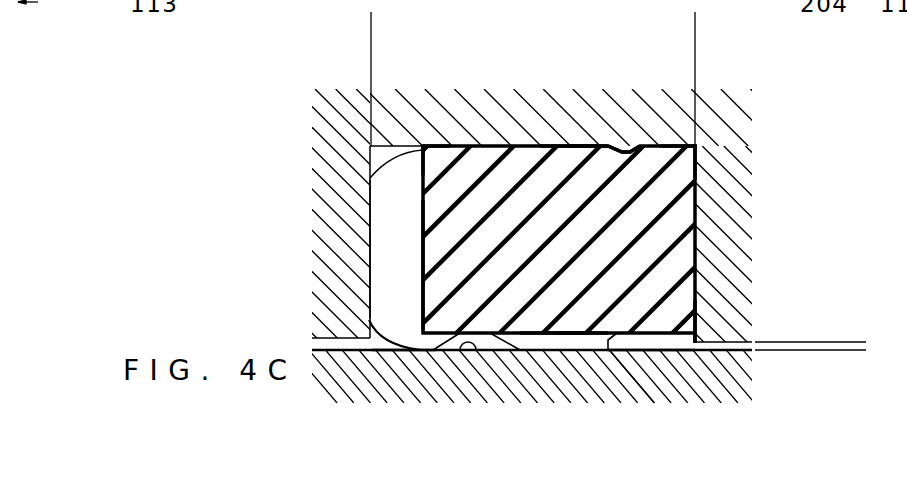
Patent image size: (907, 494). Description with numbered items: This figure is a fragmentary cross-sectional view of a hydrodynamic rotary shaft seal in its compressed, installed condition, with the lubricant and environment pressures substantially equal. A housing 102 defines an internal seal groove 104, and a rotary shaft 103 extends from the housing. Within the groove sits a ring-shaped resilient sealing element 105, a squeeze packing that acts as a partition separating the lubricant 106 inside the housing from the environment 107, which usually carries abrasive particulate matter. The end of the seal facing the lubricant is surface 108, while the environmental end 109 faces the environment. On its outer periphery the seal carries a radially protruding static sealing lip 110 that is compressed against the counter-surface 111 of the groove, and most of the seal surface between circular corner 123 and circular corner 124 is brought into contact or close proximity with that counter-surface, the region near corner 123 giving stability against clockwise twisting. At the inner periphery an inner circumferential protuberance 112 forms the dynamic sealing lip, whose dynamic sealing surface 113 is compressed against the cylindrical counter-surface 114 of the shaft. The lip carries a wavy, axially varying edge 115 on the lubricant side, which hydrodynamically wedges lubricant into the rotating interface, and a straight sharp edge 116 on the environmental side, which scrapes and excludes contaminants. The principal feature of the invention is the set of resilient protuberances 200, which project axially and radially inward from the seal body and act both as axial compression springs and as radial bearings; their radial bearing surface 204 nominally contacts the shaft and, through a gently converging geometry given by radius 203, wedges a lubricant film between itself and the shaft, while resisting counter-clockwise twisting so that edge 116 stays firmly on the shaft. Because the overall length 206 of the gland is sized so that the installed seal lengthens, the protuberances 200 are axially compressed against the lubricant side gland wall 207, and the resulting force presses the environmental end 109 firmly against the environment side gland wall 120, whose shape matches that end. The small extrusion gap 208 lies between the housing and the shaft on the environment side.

The housing 102 is at (480, 105).
The rotary shaft 103 is at (340, 373).
The seal groove 104 is at (392, 156).
The hydrodynamic rotary shaft sealing element 105 is at (547, 217).
The lubricant 106 is at (380, 342).
The environment 107 is at (640, 347).
The lubricant end surface 108 is at (423, 252).
The environmental end 109 is at (700, 250).
The static sealing lip 110 is at (567, 148).
The counter-surface of the groove 111 is at (578, 148).
The inner circumferential protuberance 112 is at (563, 333).
The dynamic sealing surface 113 is at (570, 330).
The counter-surface of the shaft 114 is at (580, 146).
The wavy axially varying edge 115 is at (503, 340).
The straight sharp edge 116 is at (627, 373).
The environment side gland wall 120 is at (690, 295).
The circular corner 123 is at (421, 145).
The circular corner 124 is at (697, 144).
The resilient protuberances 200 is at (387, 240).
The radius 203 is at (238, 16).
The radial bearing surface 204 is at (432, 352).
The overall length of the gland 206 is at (695, 22).
The lubricant side gland wall 207 is at (371, 277).
The extrusion gap 208 is at (860, 376).